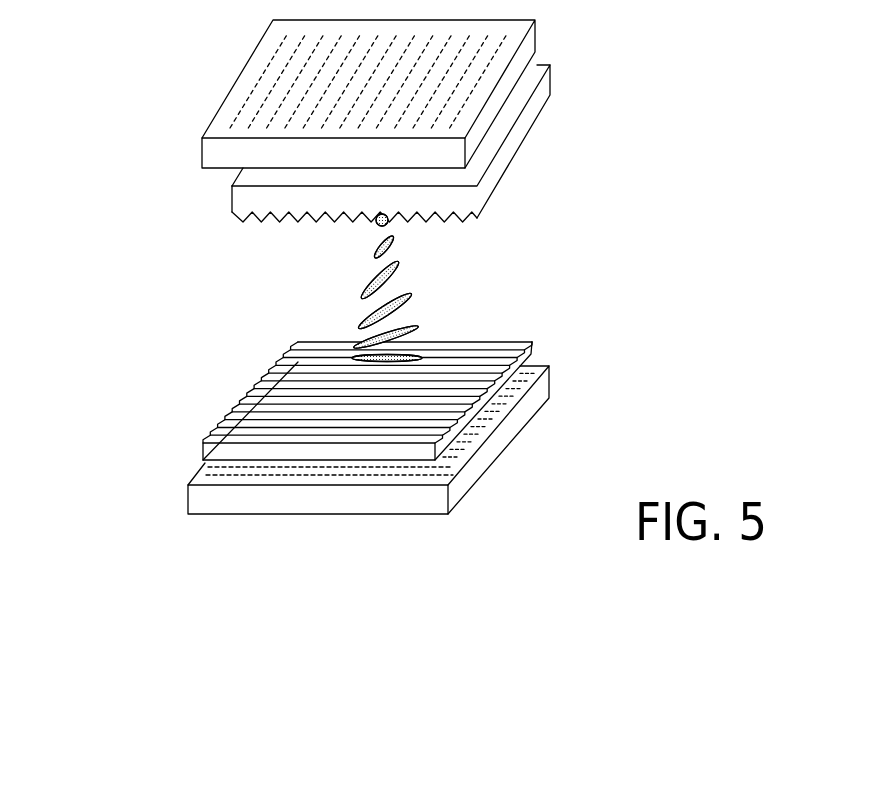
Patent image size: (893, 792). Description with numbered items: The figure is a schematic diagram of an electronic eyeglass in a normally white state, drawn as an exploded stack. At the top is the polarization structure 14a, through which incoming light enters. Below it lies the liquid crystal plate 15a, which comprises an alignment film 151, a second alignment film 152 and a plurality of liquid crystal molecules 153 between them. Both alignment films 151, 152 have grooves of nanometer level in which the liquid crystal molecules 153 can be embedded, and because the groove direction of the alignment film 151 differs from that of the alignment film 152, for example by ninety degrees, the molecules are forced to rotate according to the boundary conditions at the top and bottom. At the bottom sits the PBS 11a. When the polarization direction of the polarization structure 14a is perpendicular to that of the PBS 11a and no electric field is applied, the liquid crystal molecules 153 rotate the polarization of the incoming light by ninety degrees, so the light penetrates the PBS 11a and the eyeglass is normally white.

The polarization structure 14a is at (202, 153).
The alignment film 151 is at (232, 193).
The alignment film 152 is at (203, 452).
The liquid crystal molecules 153 is at (412, 293).
The liquid crystal plate 15a is at (110, 202).
The PBS 11a is at (188, 500).